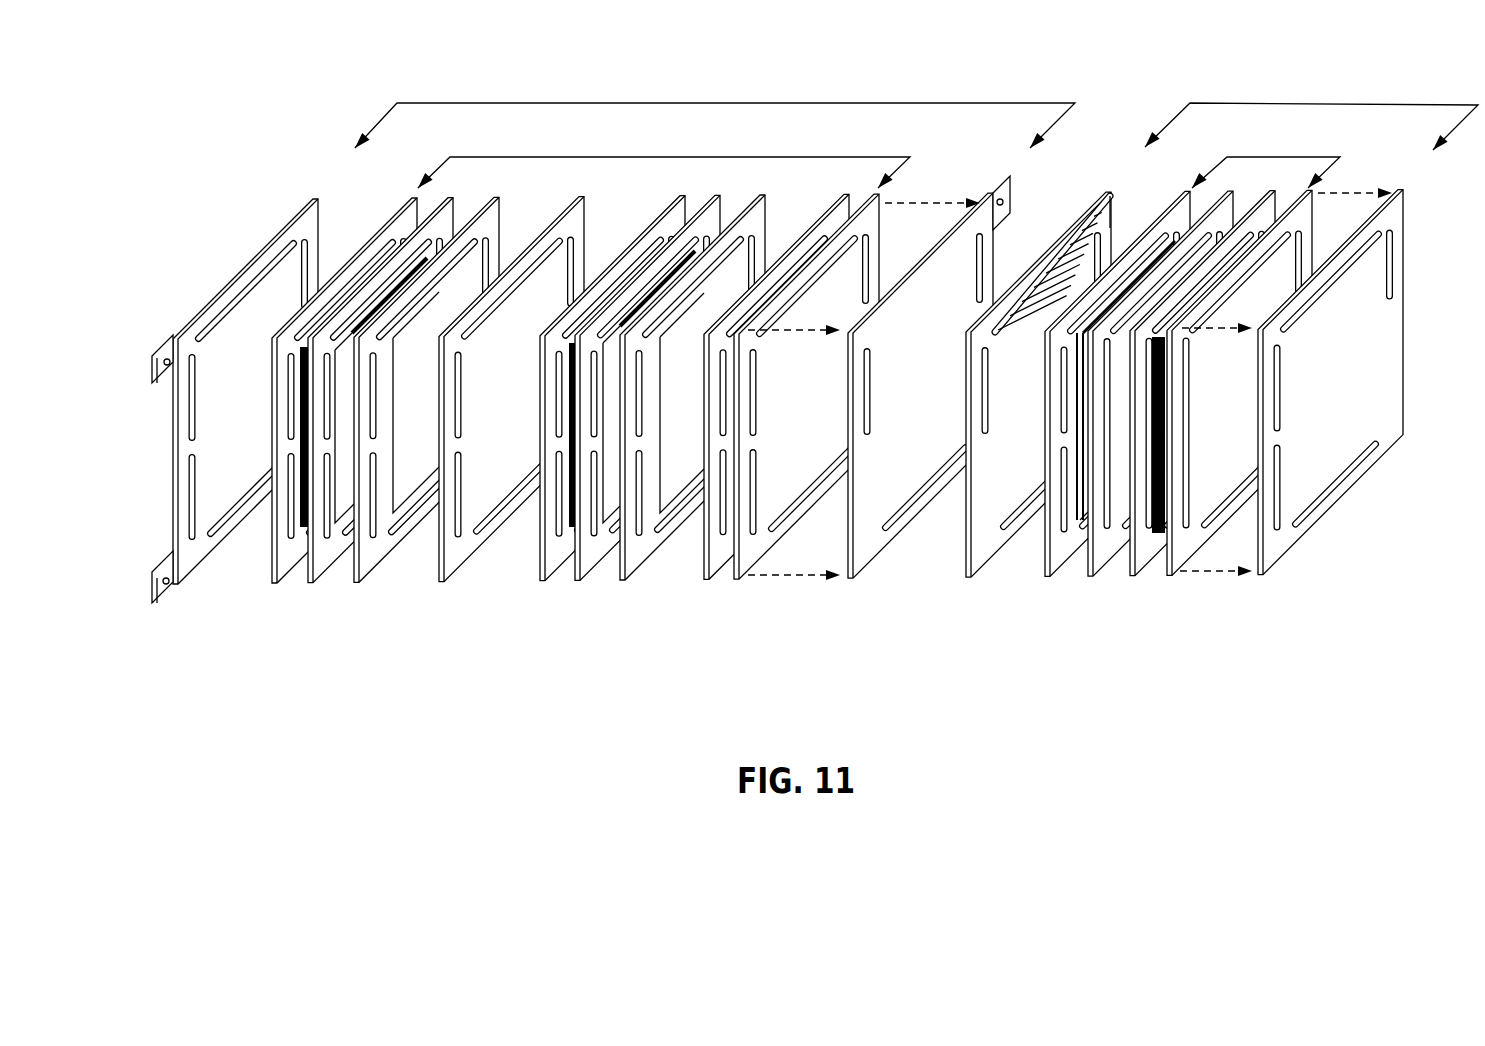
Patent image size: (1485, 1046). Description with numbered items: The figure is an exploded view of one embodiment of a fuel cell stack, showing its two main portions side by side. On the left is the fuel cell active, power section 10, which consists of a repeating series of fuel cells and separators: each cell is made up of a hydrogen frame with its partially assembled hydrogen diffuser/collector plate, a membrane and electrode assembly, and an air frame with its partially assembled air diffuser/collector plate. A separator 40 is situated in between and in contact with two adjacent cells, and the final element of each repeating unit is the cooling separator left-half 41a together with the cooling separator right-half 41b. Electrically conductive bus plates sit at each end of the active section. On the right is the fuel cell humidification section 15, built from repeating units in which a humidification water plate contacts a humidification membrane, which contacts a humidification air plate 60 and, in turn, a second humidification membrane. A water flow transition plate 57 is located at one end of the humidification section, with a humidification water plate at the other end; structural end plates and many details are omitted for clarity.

The fuel cell active, power section 10 is at (718, 102).
The fuel cell humidification section 15 is at (1320, 103).
The separator 40 is at (442, 598).
The cooling separator left-half 41a is at (707, 595).
The cooling separator right-half 41b is at (737, 595).
The water flow transition plate 57 is at (969, 593).
The humidification air plate 60 is at (1133, 592).